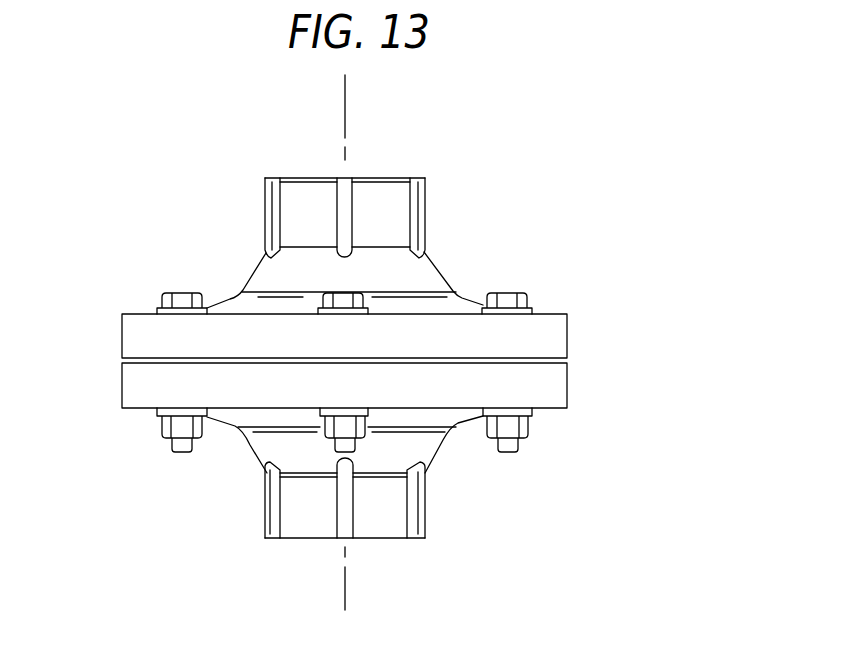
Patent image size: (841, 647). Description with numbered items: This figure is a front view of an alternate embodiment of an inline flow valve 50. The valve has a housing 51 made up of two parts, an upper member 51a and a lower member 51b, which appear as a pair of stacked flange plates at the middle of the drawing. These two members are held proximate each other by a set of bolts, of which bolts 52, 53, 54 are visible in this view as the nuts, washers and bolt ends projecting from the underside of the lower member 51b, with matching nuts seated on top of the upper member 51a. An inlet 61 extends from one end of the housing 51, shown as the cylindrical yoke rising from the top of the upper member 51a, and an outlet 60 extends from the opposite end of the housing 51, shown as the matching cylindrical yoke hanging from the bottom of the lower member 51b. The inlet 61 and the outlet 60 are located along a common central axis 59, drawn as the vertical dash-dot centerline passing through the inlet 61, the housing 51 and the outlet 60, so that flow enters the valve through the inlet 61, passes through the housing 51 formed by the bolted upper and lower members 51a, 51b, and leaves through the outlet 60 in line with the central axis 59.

The inline flow valve 50 is at (606, 256).
The housing 51 is at (456, 295).
The upper member 51a is at (567, 318).
The lower member 51b is at (567, 378).
The bolt 52 is at (523, 432).
The bolt 53 is at (327, 432).
The bolt 54 is at (167, 438).
The central axis 59 is at (345, 97).
The outlet 60 is at (416, 528).
The inlet 61 is at (413, 178).